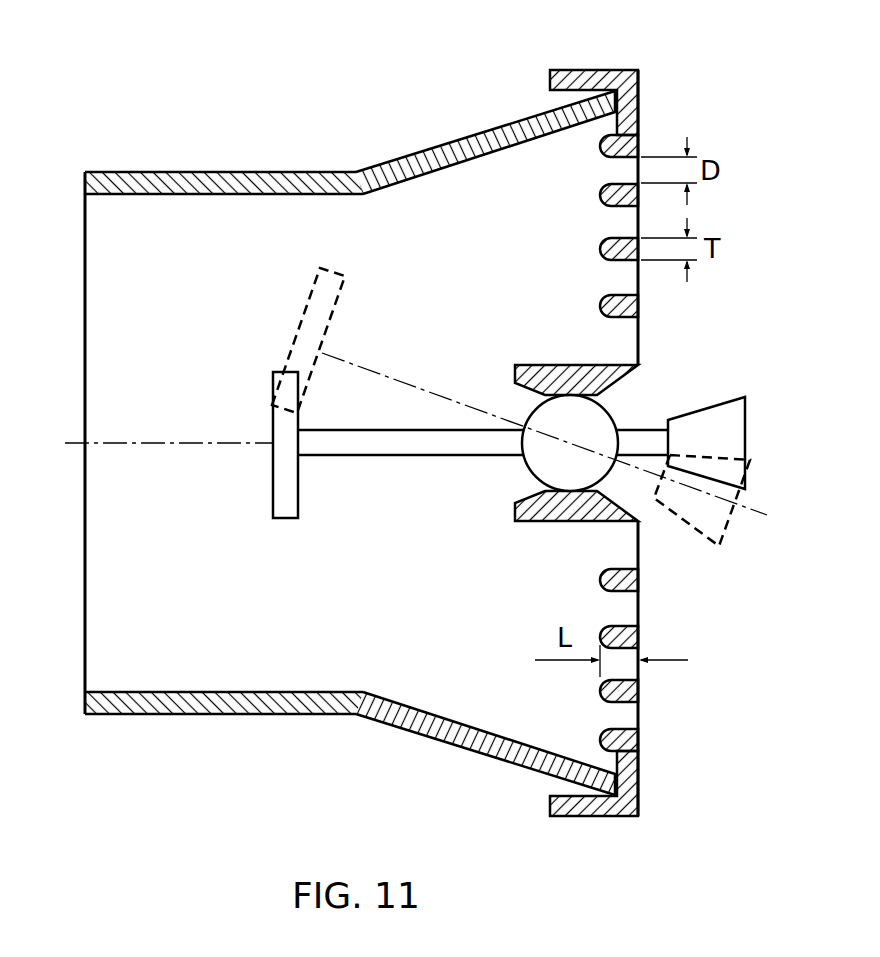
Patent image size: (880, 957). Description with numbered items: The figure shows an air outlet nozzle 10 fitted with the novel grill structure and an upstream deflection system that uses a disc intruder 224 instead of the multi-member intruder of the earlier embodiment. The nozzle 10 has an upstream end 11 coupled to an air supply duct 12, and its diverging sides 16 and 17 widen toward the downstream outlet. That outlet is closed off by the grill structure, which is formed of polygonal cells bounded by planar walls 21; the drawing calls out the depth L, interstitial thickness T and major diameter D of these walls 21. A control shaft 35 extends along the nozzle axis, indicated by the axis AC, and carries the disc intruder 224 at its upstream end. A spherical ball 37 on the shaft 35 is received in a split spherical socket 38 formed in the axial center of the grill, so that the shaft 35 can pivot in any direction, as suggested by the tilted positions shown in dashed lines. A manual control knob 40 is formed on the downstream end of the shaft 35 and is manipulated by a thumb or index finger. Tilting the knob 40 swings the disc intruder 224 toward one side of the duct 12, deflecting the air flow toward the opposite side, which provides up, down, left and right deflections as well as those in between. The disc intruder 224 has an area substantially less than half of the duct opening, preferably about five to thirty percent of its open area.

The air outlet nozzle 10 is at (361, 419).
The upstream end 11 is at (318, 713).
The air supply duct 12 is at (198, 173).
The side 16 is at (462, 748).
The side 17 is at (481, 136).
The planar walls of grill structure 21 is at (588, 443).
The disc intruder 224 is at (273, 378).
The control shaft 35 is at (403, 448).
The spherical ball 37 is at (538, 468).
The split spherical socket 38 is at (515, 363).
The manual control knob 40 is at (722, 410).
The axis of air channel AC is at (160, 440).